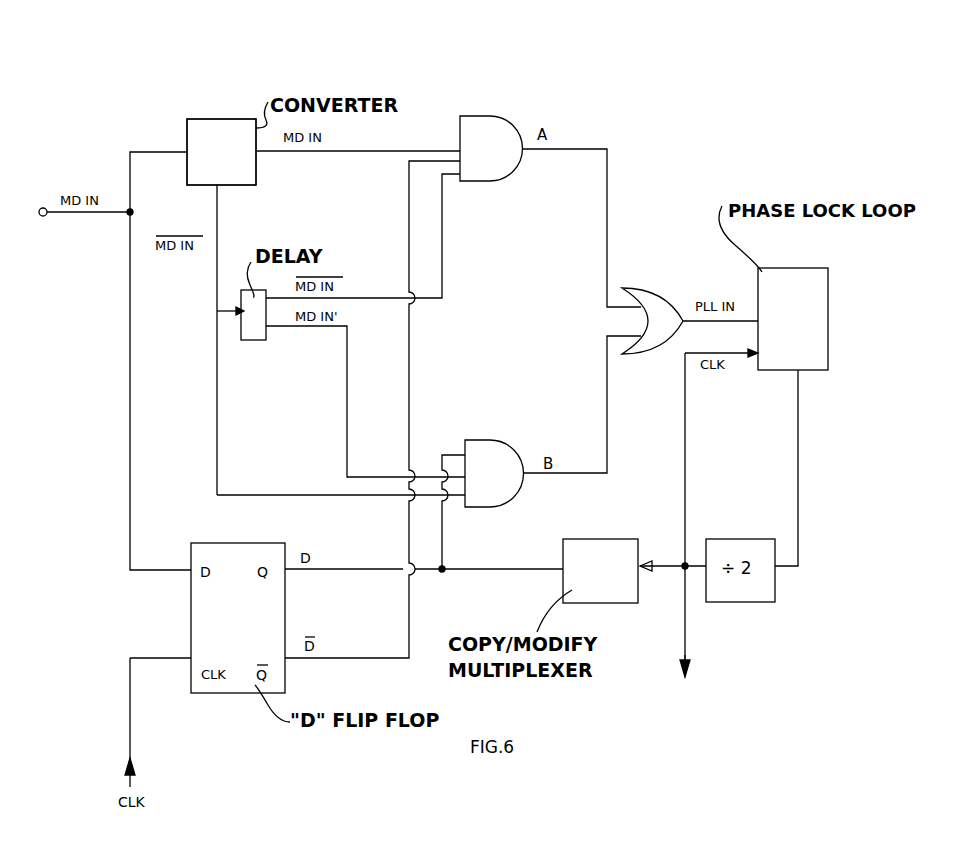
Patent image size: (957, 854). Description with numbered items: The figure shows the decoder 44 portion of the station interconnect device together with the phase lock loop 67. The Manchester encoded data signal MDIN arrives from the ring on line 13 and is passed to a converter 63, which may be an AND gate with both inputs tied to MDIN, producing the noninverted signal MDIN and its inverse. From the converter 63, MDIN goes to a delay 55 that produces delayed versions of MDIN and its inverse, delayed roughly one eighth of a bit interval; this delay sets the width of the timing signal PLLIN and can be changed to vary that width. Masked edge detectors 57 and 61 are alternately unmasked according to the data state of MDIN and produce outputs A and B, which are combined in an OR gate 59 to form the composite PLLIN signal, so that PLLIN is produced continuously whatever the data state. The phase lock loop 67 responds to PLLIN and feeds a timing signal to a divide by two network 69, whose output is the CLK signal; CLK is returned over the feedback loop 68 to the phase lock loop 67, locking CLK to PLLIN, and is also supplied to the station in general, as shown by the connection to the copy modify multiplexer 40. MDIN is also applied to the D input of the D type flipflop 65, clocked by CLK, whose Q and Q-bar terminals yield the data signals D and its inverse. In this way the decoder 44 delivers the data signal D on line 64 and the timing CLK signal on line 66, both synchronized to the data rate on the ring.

The decoder 44 is at (191, 116).
The converter 63 is at (232, 119).
The line 13 is at (99, 216).
The masked edge detector 57 is at (490, 116).
The masked edge detector 61 is at (483, 440).
The OR gate 59 is at (641, 289).
The phase lock loop 67 is at (791, 269).
The delay 55 is at (266, 340).
The line 64 is at (352, 569).
The copy modify multiplexer 40 is at (604, 603).
The divide by two network 69 is at (745, 602).
The feedback loop 68 is at (686, 461).
The line 66 is at (684, 655).
The D type flipflop 65 is at (248, 693).